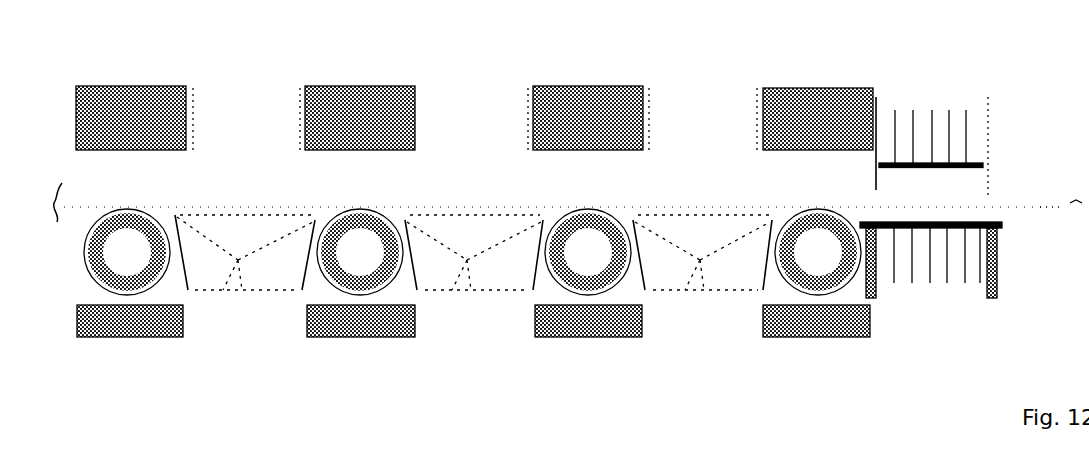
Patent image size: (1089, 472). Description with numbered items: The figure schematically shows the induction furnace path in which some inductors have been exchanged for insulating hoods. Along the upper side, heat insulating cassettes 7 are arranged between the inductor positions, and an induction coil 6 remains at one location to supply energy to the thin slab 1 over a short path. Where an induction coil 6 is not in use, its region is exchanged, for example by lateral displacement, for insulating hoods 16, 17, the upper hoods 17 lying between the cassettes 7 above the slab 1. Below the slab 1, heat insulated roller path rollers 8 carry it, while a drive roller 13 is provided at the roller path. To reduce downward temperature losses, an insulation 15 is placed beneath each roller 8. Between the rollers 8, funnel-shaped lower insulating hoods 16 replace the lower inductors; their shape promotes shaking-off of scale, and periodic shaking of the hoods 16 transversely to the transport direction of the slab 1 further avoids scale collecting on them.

The slab 1 is at (997, 195).
The induction coil 6 is at (949, 123).
The heat insulating cassette 7 is at (828, 90).
The roller path roller 8 is at (630, 273).
The drive roller 13 is at (1058, 123).
The insulation 15 is at (407, 337).
The lower insulating hood 16 is at (263, 290).
The upper insulating hood 17 is at (495, 107).